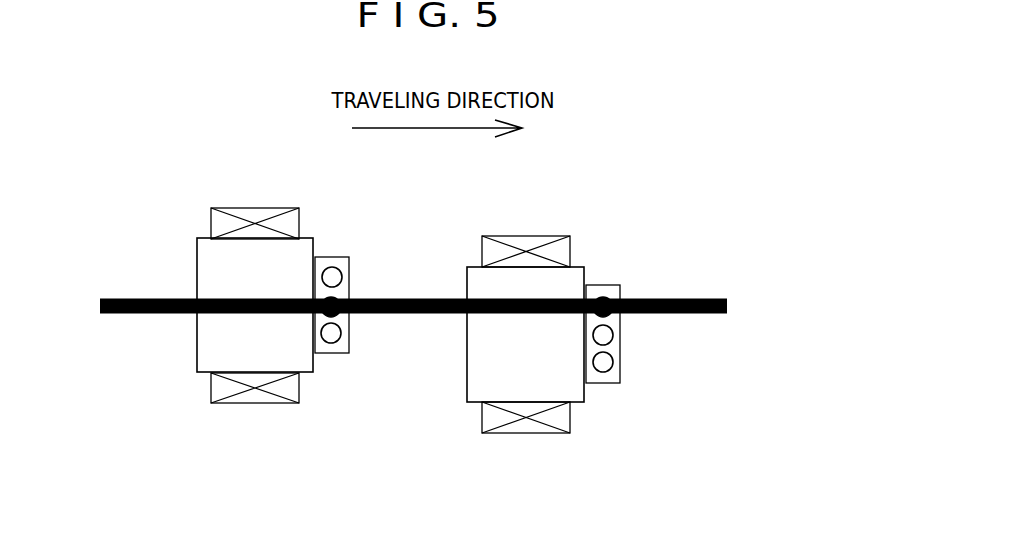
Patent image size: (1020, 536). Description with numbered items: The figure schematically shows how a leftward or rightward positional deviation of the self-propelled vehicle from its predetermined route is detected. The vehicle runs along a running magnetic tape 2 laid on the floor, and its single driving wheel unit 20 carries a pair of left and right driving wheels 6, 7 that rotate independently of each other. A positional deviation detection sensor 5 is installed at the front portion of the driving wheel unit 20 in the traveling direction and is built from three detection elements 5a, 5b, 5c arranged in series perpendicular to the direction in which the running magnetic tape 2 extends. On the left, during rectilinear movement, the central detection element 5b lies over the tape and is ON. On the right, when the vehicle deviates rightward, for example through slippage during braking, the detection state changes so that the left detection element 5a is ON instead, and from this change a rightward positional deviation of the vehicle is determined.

The running magnetic tape 2 is at (130, 297).
The driving wheel unit 20 is at (180, 377).
The driving wheel 6 is at (236, 208).
The driving wheel 7 is at (250, 403).
The positional deviation detection sensor 5 is at (323, 257).
The detection element 5a is at (336, 267).
The detection element 5b is at (348, 296).
The detection element 5c is at (330, 354).